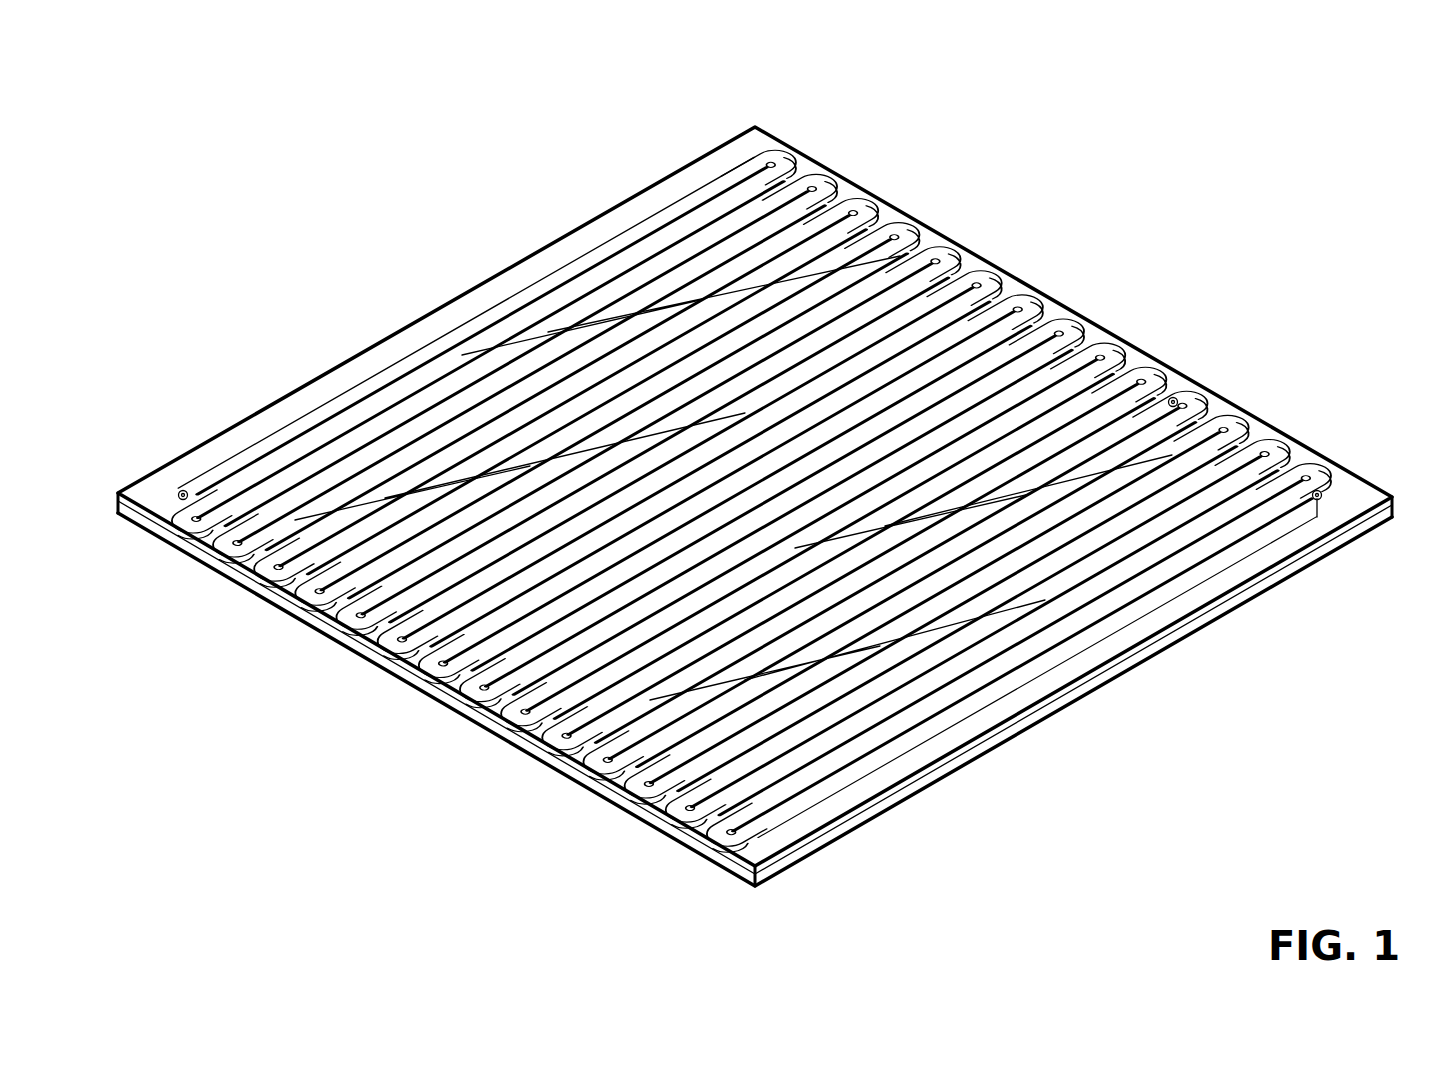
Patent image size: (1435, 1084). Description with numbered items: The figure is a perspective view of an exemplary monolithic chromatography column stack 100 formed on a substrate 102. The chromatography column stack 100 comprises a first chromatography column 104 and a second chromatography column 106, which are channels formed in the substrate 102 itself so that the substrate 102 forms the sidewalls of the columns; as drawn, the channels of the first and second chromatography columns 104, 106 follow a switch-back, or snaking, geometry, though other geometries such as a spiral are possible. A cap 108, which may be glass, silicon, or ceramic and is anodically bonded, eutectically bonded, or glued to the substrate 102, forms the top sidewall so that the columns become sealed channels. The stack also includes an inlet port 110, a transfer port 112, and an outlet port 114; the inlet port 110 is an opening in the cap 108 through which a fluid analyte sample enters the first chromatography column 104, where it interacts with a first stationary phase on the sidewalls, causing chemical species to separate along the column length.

The chromatography column stack 100 is at (1278, 73).
The substrate 102 is at (966, 774).
The first chromatography column 104 is at (988, 240).
The second chromatography column 106 is at (1276, 410).
The cap 108 is at (1353, 503).
The inlet port 110 is at (181, 490).
The transfer port 112 is at (1177, 397).
The outlet port 114 is at (1321, 490).